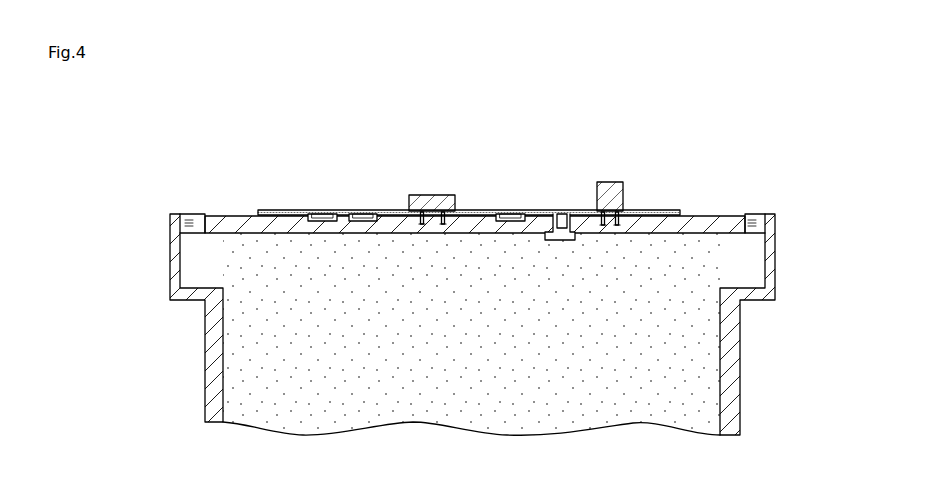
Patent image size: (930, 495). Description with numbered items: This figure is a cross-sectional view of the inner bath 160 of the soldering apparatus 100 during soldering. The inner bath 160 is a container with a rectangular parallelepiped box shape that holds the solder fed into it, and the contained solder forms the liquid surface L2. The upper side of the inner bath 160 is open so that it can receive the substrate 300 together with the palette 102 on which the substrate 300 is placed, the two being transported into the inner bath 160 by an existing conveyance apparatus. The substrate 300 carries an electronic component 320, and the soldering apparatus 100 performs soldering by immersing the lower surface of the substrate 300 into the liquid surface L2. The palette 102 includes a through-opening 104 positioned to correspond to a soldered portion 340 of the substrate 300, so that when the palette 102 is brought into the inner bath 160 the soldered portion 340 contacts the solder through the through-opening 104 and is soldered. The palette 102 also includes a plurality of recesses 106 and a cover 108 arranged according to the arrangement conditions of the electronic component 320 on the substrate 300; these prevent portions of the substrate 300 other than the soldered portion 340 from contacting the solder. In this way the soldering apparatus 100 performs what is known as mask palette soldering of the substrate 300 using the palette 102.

The soldering apparatus 100 is at (714, 122).
The palette 102 is at (228, 220).
The through-opening 104 is at (445, 225).
The recess 106 is at (324, 222).
The cover 108 is at (563, 240).
The inner bath 160 is at (778, 218).
The substrate 300 is at (496, 210).
The electronic component 320 is at (437, 195).
The soldered portion 340 is at (421, 225).
The liquid surface L2 is at (750, 214).